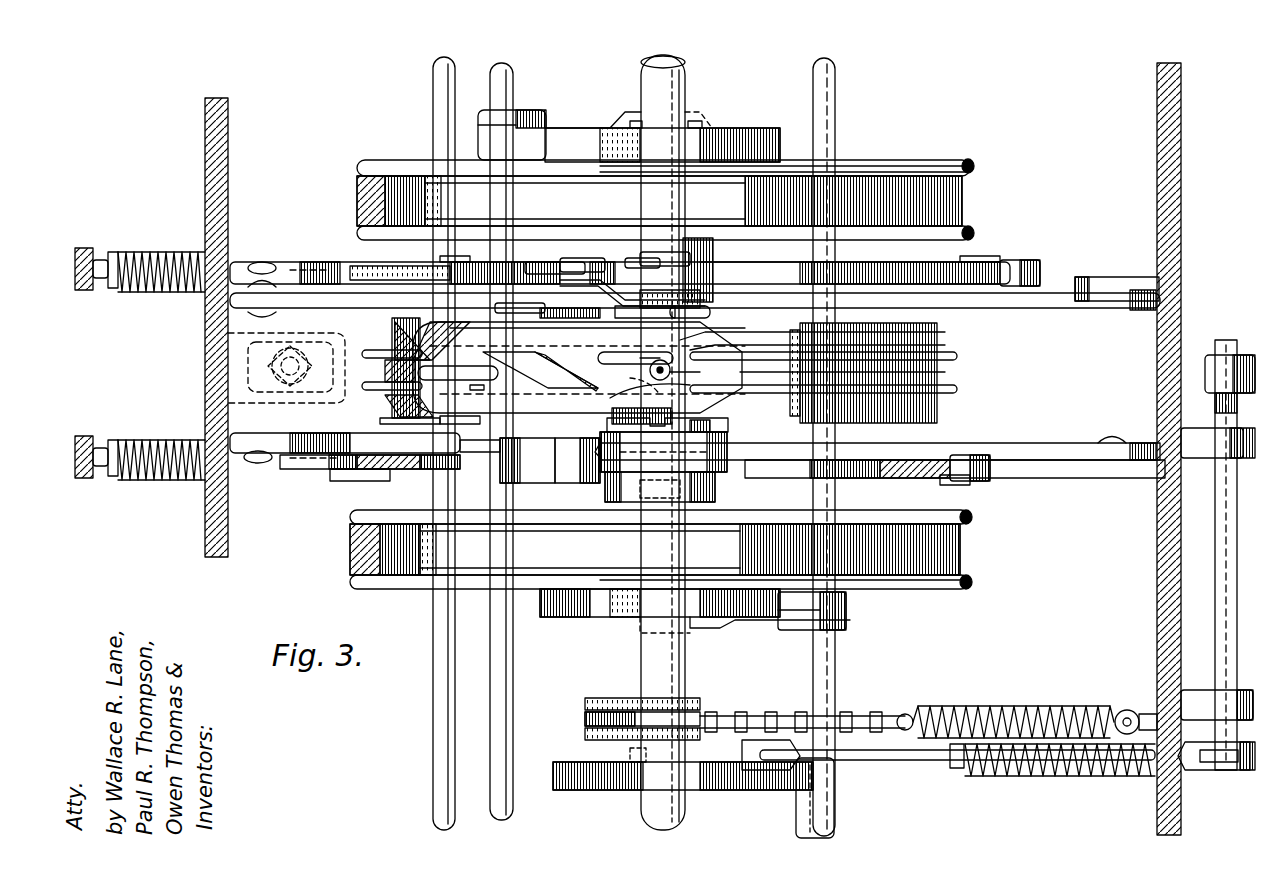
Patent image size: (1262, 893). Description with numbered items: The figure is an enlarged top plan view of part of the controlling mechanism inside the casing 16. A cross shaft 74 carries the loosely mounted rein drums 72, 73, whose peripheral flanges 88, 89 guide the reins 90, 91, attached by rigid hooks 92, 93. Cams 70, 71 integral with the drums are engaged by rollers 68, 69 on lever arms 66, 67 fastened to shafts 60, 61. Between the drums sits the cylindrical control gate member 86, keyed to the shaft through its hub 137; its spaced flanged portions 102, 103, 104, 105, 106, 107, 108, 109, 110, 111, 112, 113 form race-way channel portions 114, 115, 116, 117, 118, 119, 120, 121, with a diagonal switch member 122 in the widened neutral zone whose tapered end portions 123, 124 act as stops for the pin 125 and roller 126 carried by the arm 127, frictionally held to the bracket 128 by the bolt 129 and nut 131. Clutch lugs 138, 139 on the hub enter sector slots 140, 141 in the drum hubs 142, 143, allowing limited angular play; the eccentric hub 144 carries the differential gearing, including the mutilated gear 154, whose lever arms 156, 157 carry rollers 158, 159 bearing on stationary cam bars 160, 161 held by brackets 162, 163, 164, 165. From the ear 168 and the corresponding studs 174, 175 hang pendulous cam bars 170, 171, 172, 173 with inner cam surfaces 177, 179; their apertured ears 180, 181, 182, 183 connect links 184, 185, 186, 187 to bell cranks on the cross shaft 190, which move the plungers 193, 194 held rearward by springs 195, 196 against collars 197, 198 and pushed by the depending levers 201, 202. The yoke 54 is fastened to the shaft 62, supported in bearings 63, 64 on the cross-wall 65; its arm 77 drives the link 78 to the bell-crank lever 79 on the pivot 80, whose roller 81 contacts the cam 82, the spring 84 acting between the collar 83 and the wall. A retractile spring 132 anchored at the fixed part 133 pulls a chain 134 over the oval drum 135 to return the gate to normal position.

The casing 16 is at (205, 343).
The cross-wall 65 is at (1157, 572).
The yoke 54 is at (1212, 362).
The shaft 60 is at (513, 71).
The shaft 61 is at (835, 76).
The shaft 62 is at (1218, 580).
The bearing 63 is at (1205, 700).
The bearing 64 is at (1208, 455).
The lever arm 66 is at (615, 125).
The lever arm 67 is at (790, 620).
The roller 68 is at (700, 126).
The roller 69 is at (636, 620).
The cam 70 is at (755, 132).
The cam 71 is at (588, 617).
The rein drum 72 is at (860, 166).
The rein drum 73 is at (880, 590).
The cross shaft 74 is at (685, 72).
The arm 77 is at (1222, 762).
The link 78 is at (905, 760).
The bell-crank lever 79 is at (760, 730).
The pivot 80 is at (800, 800).
The roller 81 is at (630, 756).
The cam 82 is at (705, 790).
The collar 83 is at (956, 768).
The spring 84 is at (1058, 776).
The control gate member 86 is at (937, 335).
The peripheral flange 88 is at (975, 172).
The peripheral flange 89 is at (973, 522).
The rein 90 is at (357, 188).
The rein 91 is at (352, 550).
The hook 92 is at (430, 178).
The hook 93 is at (426, 575).
The flanged portion 102 is at (960, 357).
The flanged portion 103 is at (960, 390).
The flanged portion 104 is at (720, 342).
The flanged portion 105 is at (720, 398).
The flanged portion 106 is at (604, 330).
The flanged portion 107 is at (640, 357).
The flanged portion 108 is at (636, 384).
The flanged portion 109 is at (436, 361).
The flanged portion 110 is at (462, 392).
The flanged portion 111 is at (477, 390).
The flanged portion 112 is at (400, 350).
The flanged portion 113 is at (395, 427).
The race-way channel portion 114 is at (948, 372).
The race-way channel portion 115 is at (720, 360).
The race-way channel portion 116 is at (618, 362).
The race-way channel portion 117 is at (587, 339).
The race-way channel portion 118 is at (440, 340).
The race-way channel portion 119 is at (434, 426).
The race-way channel portion 120 is at (592, 404).
The race-way channel portion 121 is at (645, 412).
The switch member 122 is at (540, 371).
The tapered end portion 123 is at (390, 400).
The tapered end portion 124 is at (700, 372).
The pin 125 is at (663, 360).
The roller 126 is at (710, 312).
The arm 127 is at (342, 342).
The bracket 128 is at (258, 342).
The bolt 129 is at (278, 384).
The nut 131 is at (296, 390).
The retractile spring 132 is at (1020, 712).
The fixed part 133 is at (1130, 710).
The chain 134 is at (885, 718).
The drum 135 is at (670, 712).
The hub 137 is at (672, 390).
The clutch lug 138 is at (672, 300).
The clutch lug 139 is at (663, 452).
The sector slot 140 is at (705, 300).
The sector slot 141 is at (712, 433).
The hub 142 is at (713, 246).
The hub 143 is at (632, 505).
The eccentric hub 144 is at (522, 303).
The mutilated gear 154 is at (598, 288).
The lever arm 156 is at (534, 262).
The lever arm 157 is at (528, 485).
The roller 158 is at (578, 262).
The roller 159 is at (575, 485).
The cam bar 160 is at (1032, 308).
The cam bar 161 is at (1040, 445).
The bracket 162 is at (1085, 277).
The bracket 163 is at (262, 262).
The bracket 164 is at (1114, 462).
The bracket 165 is at (258, 463).
The ear 168 is at (610, 310).
The cam bar 170 is at (760, 280).
The cam bar 171 is at (478, 278).
The cam bar 172 is at (915, 480).
The cam bar 173 is at (396, 470).
The pivot stud 174 is at (646, 255).
The pivot stud 175 is at (662, 500).
The inner cam surface 177 is at (475, 455).
The inner cam surface 179 is at (845, 480).
The apertured ear 180 is at (996, 290).
The apertured ear 181 is at (330, 264).
The apertured ear 182 is at (990, 478).
The apertured ear 183 is at (318, 460).
The link 184 is at (870, 266).
The link 185 is at (418, 262).
The link 186 is at (790, 478).
The link 187 is at (358, 482).
The cross shaft 190 is at (433, 84).
The plunger 193 is at (305, 262).
The plunger 194 is at (164, 478).
The spring 195 is at (170, 256).
The spring 196 is at (170, 444).
The collar 197 is at (114, 256).
The collar 198 is at (114, 444).
The lever 201 is at (85, 248).
The lever 202 is at (85, 436).